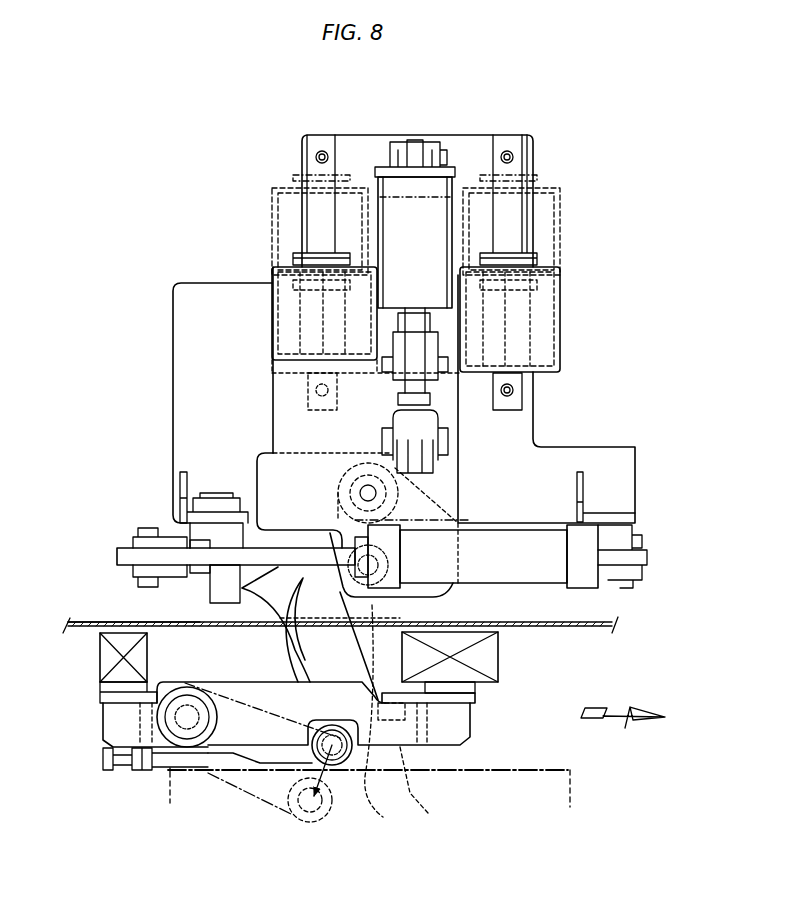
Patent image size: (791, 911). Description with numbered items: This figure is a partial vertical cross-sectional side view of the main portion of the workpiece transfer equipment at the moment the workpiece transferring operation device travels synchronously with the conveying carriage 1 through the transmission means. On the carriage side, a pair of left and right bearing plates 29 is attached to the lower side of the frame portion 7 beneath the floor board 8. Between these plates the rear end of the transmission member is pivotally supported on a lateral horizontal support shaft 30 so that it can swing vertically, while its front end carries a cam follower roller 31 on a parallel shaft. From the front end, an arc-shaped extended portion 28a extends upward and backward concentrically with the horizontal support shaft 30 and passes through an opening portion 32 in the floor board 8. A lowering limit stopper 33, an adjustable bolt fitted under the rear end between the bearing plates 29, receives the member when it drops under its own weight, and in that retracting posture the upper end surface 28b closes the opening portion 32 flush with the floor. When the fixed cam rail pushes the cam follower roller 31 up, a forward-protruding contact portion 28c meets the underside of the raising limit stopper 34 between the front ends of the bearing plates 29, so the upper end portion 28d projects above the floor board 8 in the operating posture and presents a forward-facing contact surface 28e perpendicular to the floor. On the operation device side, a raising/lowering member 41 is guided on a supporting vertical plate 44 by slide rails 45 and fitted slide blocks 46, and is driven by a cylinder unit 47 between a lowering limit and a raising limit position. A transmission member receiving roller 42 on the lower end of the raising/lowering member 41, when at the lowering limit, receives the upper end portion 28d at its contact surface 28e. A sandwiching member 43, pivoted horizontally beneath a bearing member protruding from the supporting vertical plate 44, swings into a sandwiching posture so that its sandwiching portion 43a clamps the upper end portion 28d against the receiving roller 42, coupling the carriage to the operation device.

The conveying carriage 1 is at (95, 617).
The frame portion 7 is at (97, 659).
The floor board 8 is at (515, 622).
The arc-shaped extended portion 28a is at (475, 697).
The upper end surface 28b is at (277, 567).
The contact portion 28c is at (403, 775).
The upper end portion 28d is at (282, 622).
The contact surface 28e is at (340, 620).
The bearing plates 29 is at (253, 740).
The horizontal support shaft 30 is at (185, 718).
The cam follower roller 31 is at (320, 810).
The opening portion 32 is at (366, 600).
The lowering limit stopper 33 is at (170, 772).
The raising limit stopper 34 is at (433, 717).
The raising/lowering member 41 is at (447, 405).
The transmission member receiving roller 42 is at (393, 498).
The sandwiching member 43 is at (222, 553).
The sandwiching portion 43a is at (227, 588).
The supporting vertical plate 44 is at (472, 150).
The slide rails 45 is at (320, 223).
The slide blocks 46 is at (292, 313).
The cylinder unit 47 is at (412, 217).